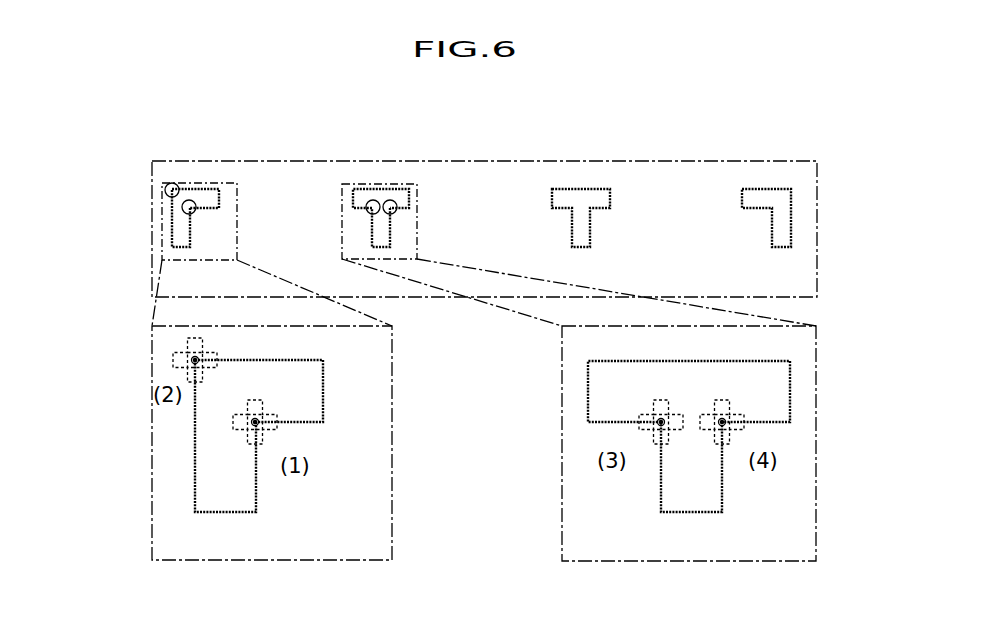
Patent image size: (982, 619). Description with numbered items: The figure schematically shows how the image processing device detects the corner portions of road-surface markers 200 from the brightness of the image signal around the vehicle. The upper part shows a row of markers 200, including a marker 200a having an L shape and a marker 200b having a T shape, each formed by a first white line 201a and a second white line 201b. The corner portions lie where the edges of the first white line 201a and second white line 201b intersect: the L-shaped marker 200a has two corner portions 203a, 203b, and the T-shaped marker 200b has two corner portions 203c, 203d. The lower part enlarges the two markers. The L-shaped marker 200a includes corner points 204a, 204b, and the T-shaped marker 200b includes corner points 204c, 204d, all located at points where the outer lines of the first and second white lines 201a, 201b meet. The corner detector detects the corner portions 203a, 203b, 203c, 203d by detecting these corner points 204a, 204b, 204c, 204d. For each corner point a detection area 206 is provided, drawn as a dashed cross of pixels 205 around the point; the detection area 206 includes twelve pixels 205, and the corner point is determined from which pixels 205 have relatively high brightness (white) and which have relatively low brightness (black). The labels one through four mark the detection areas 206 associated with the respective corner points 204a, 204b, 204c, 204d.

The markers 200 is at (484, 311).
The L-shaped marker 200a is at (533, 335).
The T-shaped marker 200b is at (381, 189).
The first white line 201a is at (220, 196).
The second white line 201b is at (192, 230).
The corner portion 203a is at (165, 190).
The corner portion 203b is at (183, 210).
The corner portion 203c is at (368, 202).
The corner portion 203d is at (397, 206).
The corner point 204a is at (262, 432).
The corner point 204b is at (174, 364).
The corner point 204c is at (656, 414).
The corner point 204d is at (735, 425).
The pixels 205 is at (190, 357).
The detection area 206 is at (212, 358).